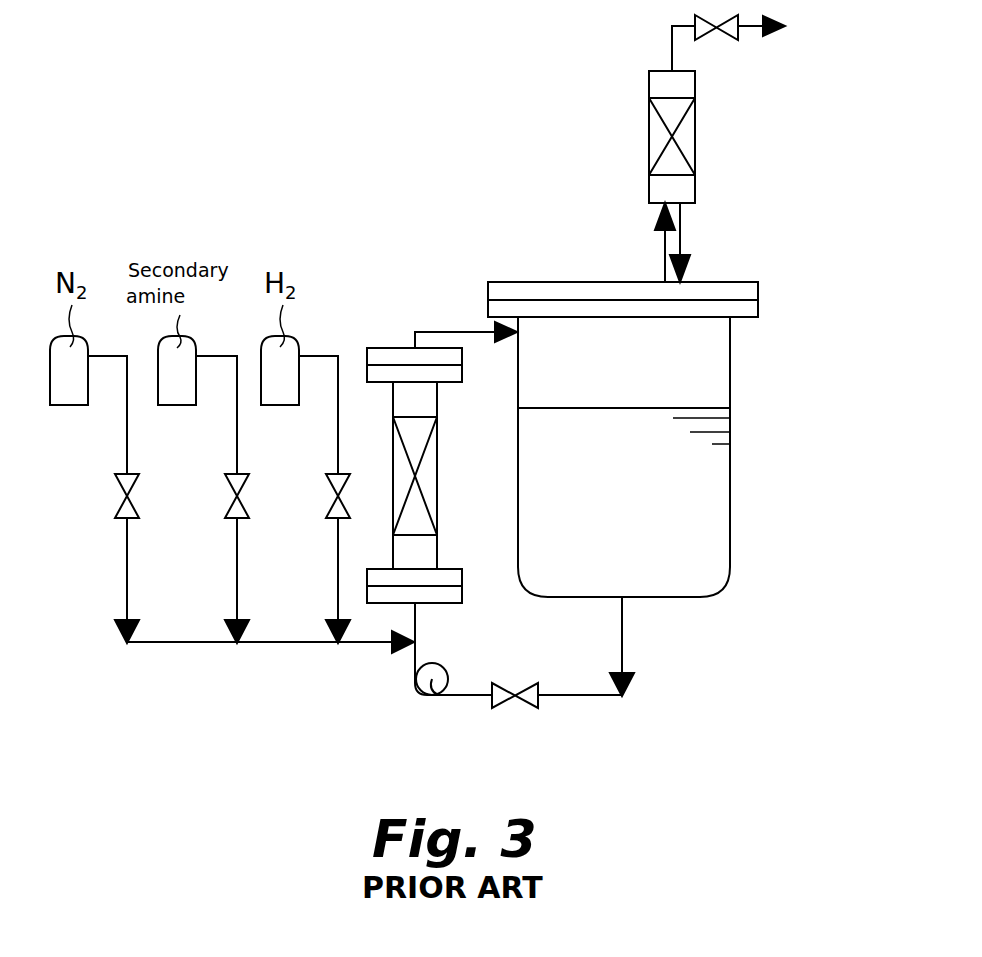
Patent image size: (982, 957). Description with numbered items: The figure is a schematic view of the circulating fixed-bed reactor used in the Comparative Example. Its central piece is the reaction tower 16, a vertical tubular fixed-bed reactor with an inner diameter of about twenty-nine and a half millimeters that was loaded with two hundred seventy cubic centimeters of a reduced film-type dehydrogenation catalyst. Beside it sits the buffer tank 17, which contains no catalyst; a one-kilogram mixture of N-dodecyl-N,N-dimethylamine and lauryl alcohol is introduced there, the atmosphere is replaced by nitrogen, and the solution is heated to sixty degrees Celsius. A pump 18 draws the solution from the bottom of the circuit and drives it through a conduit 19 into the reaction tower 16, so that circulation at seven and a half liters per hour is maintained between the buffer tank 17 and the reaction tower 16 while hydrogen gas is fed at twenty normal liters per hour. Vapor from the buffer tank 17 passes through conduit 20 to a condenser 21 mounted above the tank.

The reaction tower 16 is at (440, 477).
The buffer tank 17 is at (731, 503).
The pump 18 is at (447, 668).
The conduit 19 is at (416, 622).
The conduit 20 is at (683, 222).
The condenser 21 is at (697, 125).